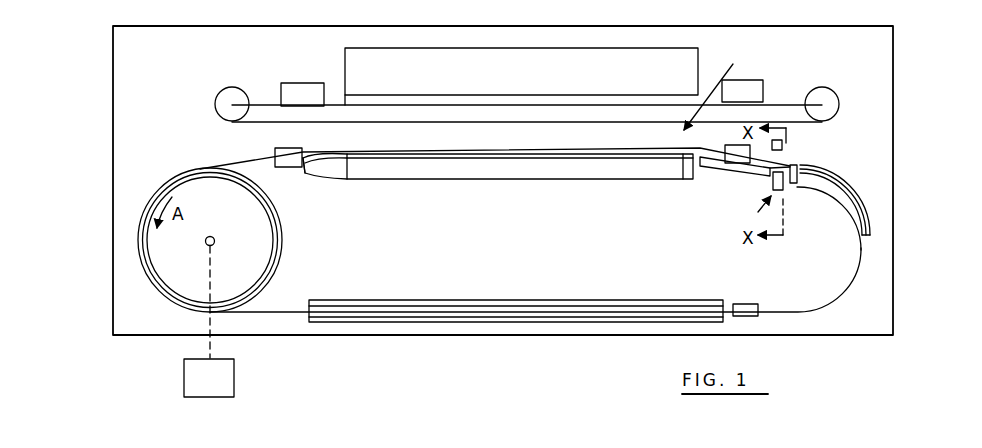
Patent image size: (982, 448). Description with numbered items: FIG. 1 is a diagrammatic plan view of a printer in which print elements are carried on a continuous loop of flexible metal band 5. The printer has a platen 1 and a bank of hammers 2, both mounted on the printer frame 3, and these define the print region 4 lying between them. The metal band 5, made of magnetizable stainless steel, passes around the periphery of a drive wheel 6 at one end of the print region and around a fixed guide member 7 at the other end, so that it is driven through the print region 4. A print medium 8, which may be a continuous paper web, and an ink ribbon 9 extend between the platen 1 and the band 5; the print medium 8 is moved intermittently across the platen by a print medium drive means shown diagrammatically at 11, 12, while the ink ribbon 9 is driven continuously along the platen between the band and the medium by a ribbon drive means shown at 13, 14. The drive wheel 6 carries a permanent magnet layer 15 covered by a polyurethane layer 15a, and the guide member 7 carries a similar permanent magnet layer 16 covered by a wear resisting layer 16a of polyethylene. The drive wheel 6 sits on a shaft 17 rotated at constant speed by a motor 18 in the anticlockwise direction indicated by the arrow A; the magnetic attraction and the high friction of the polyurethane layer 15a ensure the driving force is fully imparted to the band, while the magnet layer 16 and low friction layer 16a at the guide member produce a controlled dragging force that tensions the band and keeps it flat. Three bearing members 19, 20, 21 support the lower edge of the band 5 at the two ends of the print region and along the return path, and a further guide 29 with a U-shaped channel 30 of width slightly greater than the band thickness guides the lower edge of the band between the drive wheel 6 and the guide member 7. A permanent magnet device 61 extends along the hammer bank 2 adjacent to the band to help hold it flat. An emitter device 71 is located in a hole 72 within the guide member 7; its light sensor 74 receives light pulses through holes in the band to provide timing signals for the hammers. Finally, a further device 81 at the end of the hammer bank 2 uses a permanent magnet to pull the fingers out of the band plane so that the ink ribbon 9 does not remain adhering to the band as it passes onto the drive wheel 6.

The platen 1 is at (533, 56).
The bank of hammers 2 is at (562, 180).
The frame 3 is at (371, 26).
The print region 4 is at (708, 89).
The flexible metal band 5 is at (850, 300).
The drive wheel 6 is at (270, 256).
The fixed guide member 7 is at (845, 204).
The print medium 8 is at (337, 104).
The ink ribbon 9 is at (256, 123).
The print medium drive means 11 is at (763, 80).
The print medium drive means 12 is at (295, 86).
The ribbon drive means 13 is at (839, 103).
The ribbon drive means 14 is at (219, 92).
The permanent magnet layer 15 is at (158, 196).
The polyurethane layer 15a is at (178, 172).
The permanent magnet layer 16 is at (833, 181).
The wear resisting layer 16a is at (851, 192).
The shaft 17 is at (213, 246).
The motor 18 is at (226, 382).
The bearing member 19 is at (731, 146).
The bearing member 20 is at (290, 167).
The bearing member 21 is at (750, 305).
The guide 29 is at (441, 323).
The U-shaped channel 30 is at (650, 307).
The permanent magnet device 61 is at (683, 180).
The emitter device 71 is at (750, 209).
The hole 72 is at (771, 181).
The light sensor 74 is at (784, 148).
The device 81 is at (324, 182).